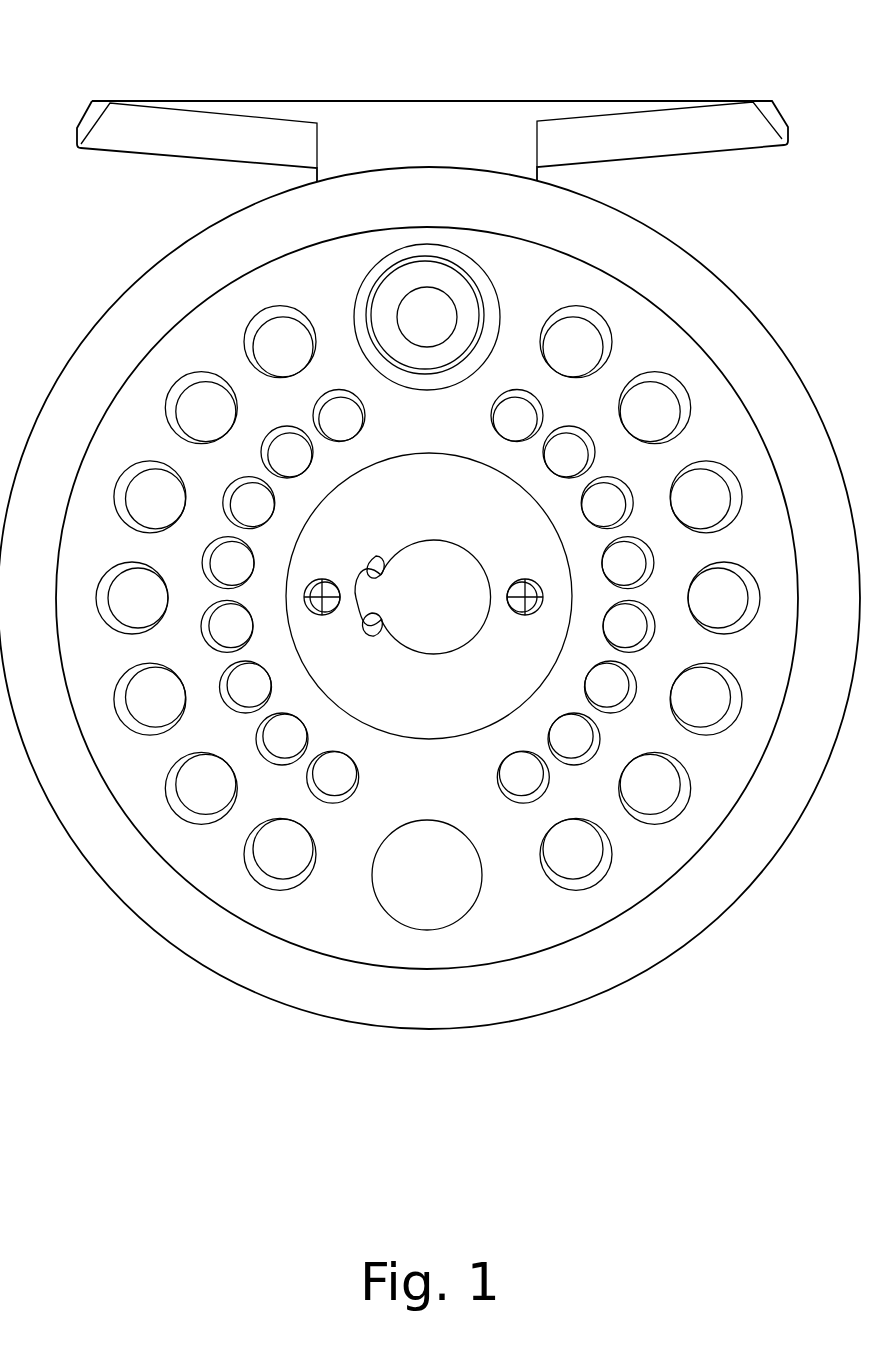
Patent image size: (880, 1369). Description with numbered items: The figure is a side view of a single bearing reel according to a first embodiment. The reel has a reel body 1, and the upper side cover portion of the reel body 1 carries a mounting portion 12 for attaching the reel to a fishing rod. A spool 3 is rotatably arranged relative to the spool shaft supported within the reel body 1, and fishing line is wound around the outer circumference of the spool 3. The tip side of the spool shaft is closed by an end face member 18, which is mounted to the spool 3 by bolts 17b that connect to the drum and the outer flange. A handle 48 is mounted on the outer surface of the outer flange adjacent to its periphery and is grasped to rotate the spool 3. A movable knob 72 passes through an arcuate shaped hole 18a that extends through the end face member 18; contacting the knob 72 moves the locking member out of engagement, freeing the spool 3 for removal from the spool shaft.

The reel body 1 is at (264, 88).
The mounting portion 12 is at (593, 115).
The handle 48 is at (458, 297).
The spool 3 is at (593, 301).
The end face member 18 is at (412, 480).
The arcuate shaped hole 18a is at (383, 568).
The bolts 17b is at (325, 590).
The movable knob 72 is at (378, 638).